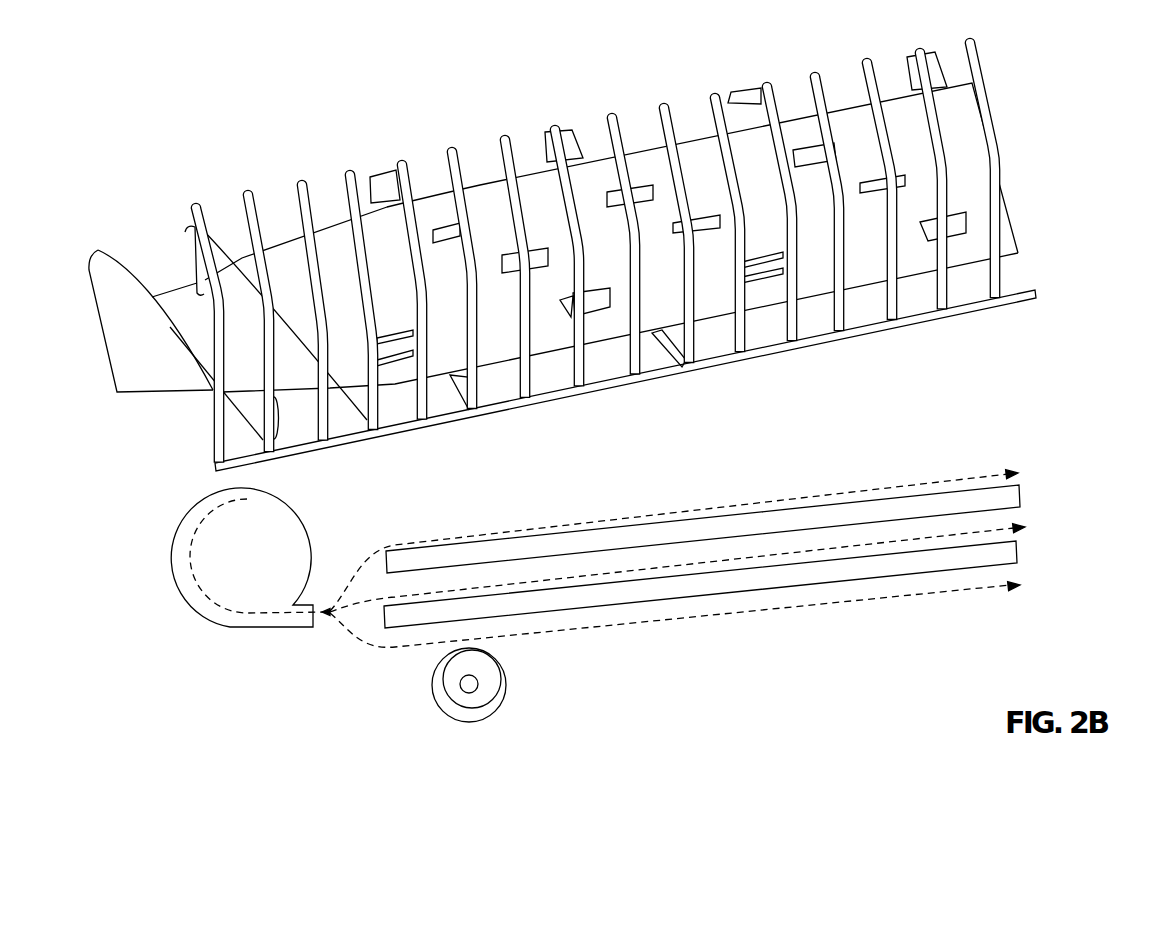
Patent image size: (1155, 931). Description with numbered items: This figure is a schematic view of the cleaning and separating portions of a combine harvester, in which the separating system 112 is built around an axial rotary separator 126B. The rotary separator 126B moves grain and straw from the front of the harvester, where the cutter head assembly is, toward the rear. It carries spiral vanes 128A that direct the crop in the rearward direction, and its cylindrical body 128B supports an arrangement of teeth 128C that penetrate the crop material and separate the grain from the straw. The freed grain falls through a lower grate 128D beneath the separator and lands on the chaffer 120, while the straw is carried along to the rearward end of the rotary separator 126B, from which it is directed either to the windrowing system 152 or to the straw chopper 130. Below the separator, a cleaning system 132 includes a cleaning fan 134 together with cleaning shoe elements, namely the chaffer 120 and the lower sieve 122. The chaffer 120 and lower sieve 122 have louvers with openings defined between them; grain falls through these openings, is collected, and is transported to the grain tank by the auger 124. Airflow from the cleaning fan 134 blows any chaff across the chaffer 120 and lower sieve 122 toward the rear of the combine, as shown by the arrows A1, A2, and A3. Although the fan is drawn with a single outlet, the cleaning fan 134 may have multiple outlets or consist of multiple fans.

The separating system 112 is at (230, 80).
The chaffer 120 is at (1022, 498).
The lower sieve 122 is at (1020, 555).
The auger 124 is at (503, 687).
The axial rotary separator 126B is at (447, 138).
The spiral vanes 128A is at (607, 140).
The cylindrical body 128B is at (852, 103).
The teeth 128C is at (740, 93).
The lower grate 128D is at (613, 390).
The straw chopper 130 is at (1028, 250).
The cleaning system 132 is at (305, 703).
The cleaning fan 134 is at (177, 577).
The windrowing system 152 is at (1028, 240).
The arrow A1 is at (870, 480).
The arrow A2 is at (943, 533).
The arrow A3 is at (887, 597).